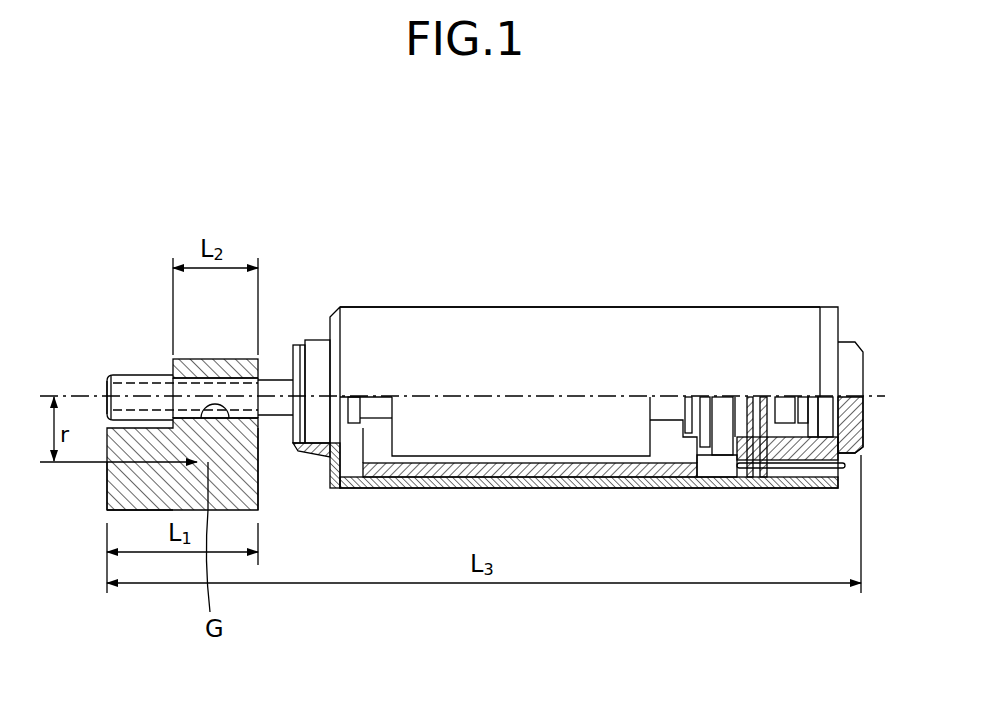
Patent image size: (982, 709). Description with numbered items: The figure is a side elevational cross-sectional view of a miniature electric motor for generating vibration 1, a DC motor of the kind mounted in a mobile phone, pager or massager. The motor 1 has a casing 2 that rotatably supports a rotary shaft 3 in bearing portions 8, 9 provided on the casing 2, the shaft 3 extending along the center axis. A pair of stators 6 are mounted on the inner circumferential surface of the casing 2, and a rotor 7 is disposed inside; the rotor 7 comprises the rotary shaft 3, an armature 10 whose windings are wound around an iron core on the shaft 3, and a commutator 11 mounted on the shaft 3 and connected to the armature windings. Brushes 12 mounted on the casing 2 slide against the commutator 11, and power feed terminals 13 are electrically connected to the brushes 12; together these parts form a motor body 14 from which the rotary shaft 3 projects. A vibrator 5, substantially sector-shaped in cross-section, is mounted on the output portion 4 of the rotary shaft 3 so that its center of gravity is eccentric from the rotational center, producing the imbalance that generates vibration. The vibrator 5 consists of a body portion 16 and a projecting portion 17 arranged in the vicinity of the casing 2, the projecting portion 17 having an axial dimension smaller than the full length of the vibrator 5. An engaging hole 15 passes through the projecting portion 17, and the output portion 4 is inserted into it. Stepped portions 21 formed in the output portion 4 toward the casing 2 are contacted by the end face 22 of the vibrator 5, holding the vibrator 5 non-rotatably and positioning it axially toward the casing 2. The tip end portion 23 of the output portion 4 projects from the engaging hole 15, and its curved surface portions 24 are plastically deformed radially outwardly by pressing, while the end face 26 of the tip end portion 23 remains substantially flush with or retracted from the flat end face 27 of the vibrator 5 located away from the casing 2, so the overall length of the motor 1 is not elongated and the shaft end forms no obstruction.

The miniature electric motor for generating vibration 1 is at (675, 214).
The casing 2 is at (445, 306).
The rotary shaft 3 is at (276, 378).
The output portion 4 is at (220, 392).
The vibrator 5 is at (101, 504).
The stators 6 is at (704, 478).
The rotor 7 is at (659, 443).
The bearing portion 8 is at (315, 400).
The bearing portion 9 is at (818, 408).
The armature 10 is at (548, 423).
The commutator 11 is at (728, 415).
The brushes 12 is at (740, 420).
The power feed terminals 13 is at (852, 469).
The motor body 14 is at (522, 302).
The engaging hole 15 is at (260, 470).
The body portion 16 is at (140, 511).
The projecting portion 17 is at (198, 374).
The stepped portions 21 is at (255, 384).
The end face 22 is at (259, 497).
The tip end portion 23 is at (127, 392).
The curved surface portions 24 is at (148, 375).
The end face 26 is at (105, 388).
The flat end face 27 is at (107, 486).